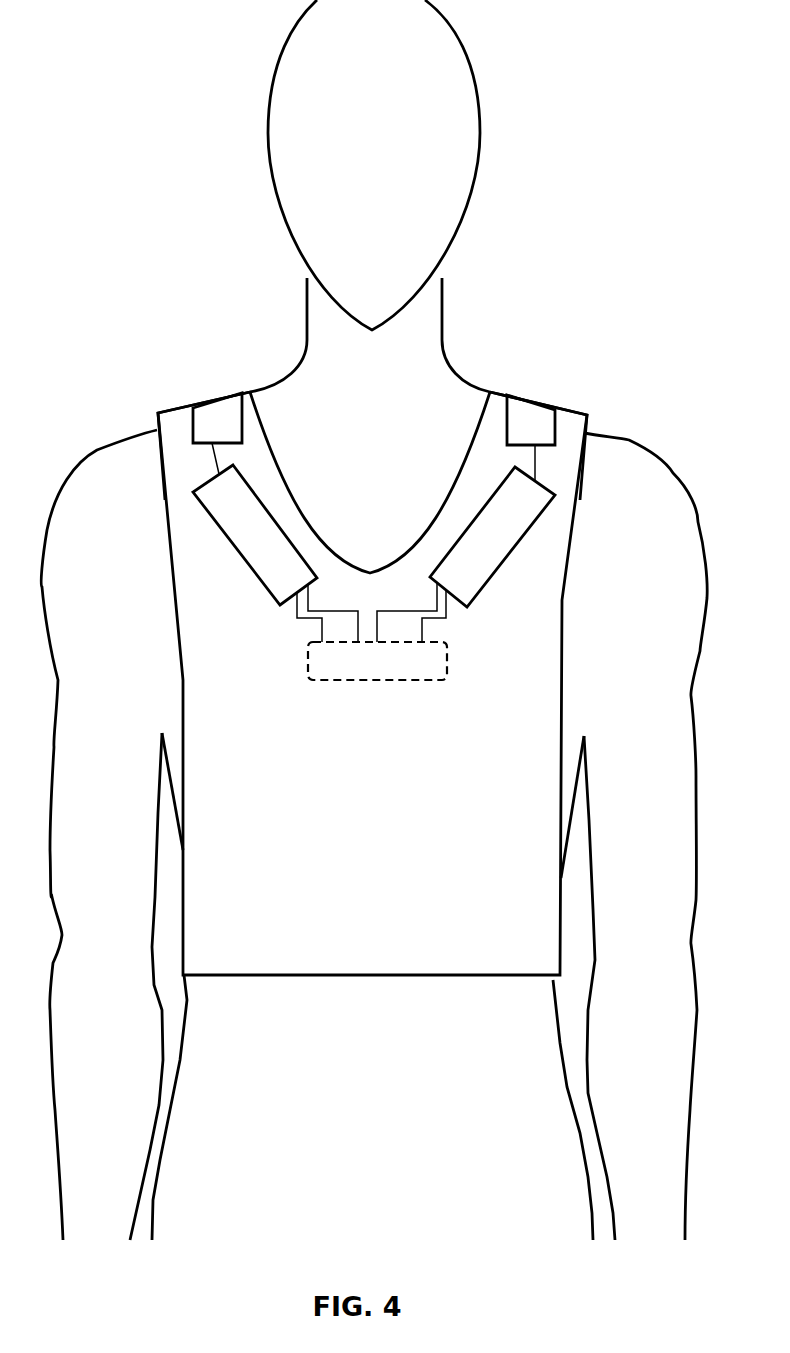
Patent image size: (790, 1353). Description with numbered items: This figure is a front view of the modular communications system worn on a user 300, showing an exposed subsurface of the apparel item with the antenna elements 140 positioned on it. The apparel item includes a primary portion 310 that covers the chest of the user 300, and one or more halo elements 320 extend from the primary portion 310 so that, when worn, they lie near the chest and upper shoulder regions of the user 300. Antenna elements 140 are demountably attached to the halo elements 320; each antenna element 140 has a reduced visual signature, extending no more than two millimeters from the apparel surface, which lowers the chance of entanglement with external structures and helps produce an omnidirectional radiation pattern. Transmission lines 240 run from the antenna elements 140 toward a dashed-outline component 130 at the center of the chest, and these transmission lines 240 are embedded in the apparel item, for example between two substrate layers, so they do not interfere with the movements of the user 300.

The user 300 is at (352, 114).
The primary portion 310 is at (352, 816).
The halo elements 320 is at (160, 415).
The antenna elements 140 is at (212, 402).
The transmission lines 240 is at (213, 465).
The controller 130 is at (352, 672).